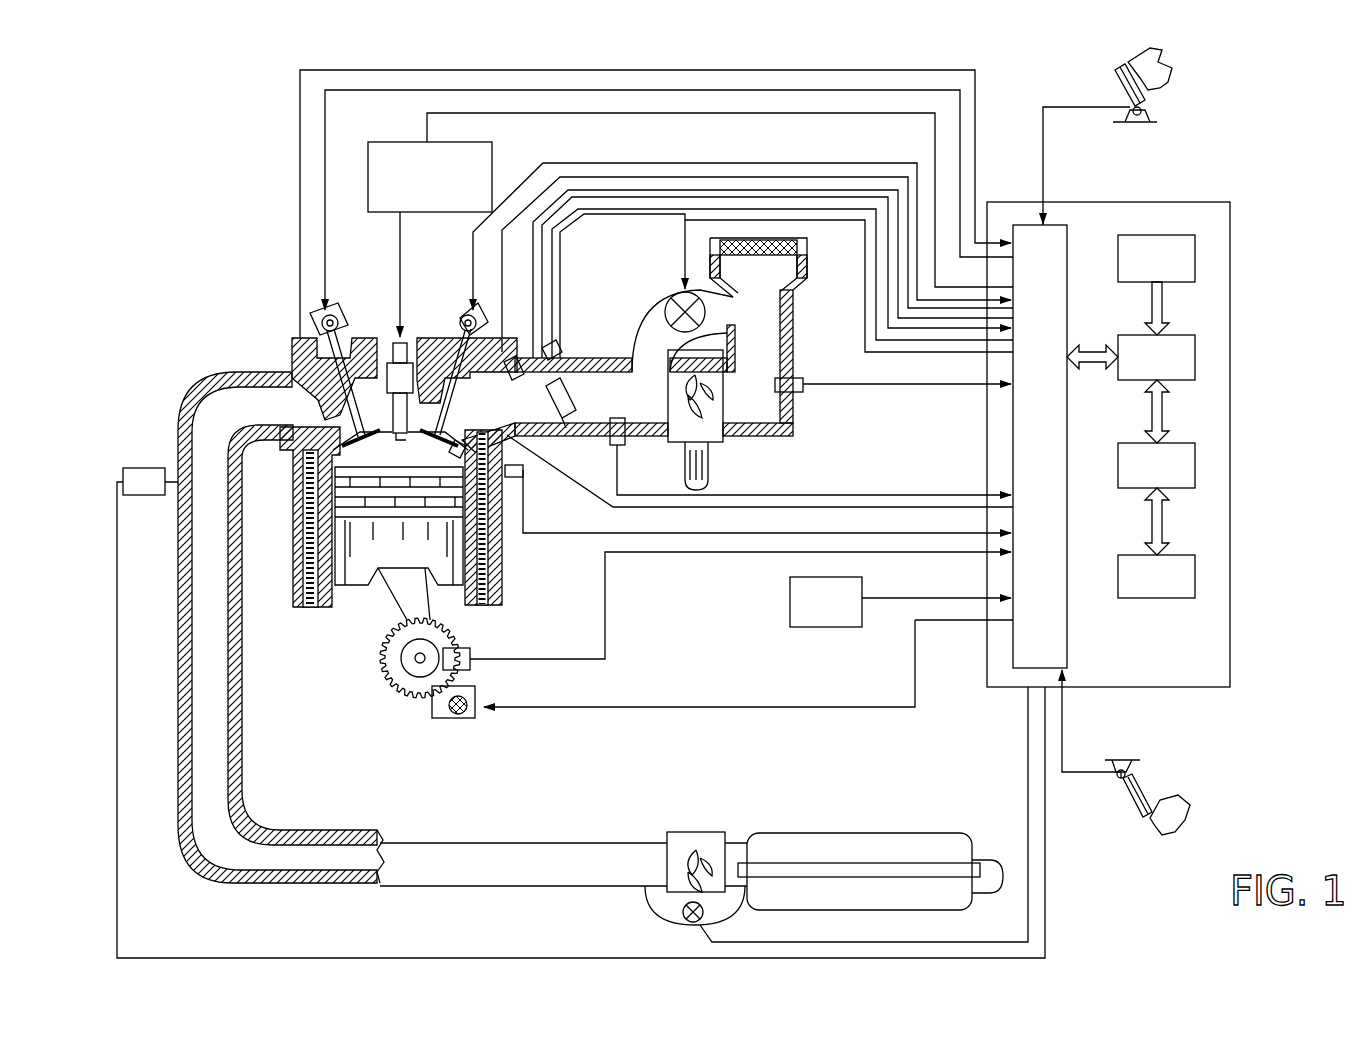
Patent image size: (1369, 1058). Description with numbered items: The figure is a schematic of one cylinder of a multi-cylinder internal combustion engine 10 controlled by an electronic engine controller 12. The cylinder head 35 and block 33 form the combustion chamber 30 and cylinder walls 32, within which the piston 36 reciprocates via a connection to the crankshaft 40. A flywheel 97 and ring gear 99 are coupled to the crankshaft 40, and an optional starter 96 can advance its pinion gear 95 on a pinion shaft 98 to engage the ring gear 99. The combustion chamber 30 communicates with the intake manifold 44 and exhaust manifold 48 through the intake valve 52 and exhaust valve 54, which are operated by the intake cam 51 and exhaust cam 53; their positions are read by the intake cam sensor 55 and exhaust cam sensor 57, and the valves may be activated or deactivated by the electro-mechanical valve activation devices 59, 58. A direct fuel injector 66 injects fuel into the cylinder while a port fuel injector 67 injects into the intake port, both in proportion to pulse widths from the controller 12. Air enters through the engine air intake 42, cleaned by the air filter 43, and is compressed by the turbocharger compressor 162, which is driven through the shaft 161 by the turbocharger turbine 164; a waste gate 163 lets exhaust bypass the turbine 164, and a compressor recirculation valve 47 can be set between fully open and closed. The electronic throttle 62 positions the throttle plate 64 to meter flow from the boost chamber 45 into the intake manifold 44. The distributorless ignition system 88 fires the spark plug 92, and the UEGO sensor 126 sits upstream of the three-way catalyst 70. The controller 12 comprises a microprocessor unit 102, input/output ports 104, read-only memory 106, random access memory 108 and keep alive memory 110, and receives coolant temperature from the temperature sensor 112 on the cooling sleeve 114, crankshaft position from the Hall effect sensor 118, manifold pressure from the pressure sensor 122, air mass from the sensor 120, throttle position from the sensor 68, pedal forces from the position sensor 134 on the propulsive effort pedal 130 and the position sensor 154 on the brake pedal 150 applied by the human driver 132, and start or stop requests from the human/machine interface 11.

The internal combustion engine 10 is at (225, 288).
The human/machine interface 11 is at (900, 602).
The electronic engine controller 12 is at (1230, 202).
The combustion chamber 30 is at (312, 545).
The cylinder walls 32 is at (330, 590).
The block 33 is at (290, 490).
The cylinder head 35 is at (288, 340).
The piston 36 is at (380, 555).
The crankshaft 40 is at (400, 688).
The engine air intake 42 is at (660, 262).
The air filter 43 is at (780, 260).
The intake manifold 44 is at (535, 409).
The boost chamber 45 is at (642, 409).
The compressor recirculation valve 47 is at (680, 295).
The exhaust manifold 48 is at (272, 416).
The intake cam 51 is at (468, 312).
The intake valve 52 is at (450, 402).
The exhaust cam 53 is at (336, 300).
The exhaust valve 54 is at (292, 385).
The intake cam sensor 55 is at (480, 320).
The exhaust cam sensor 57 is at (318, 322).
The valve activation device 58 is at (350, 300).
The valve activation device 59 is at (462, 325).
The electronic throttle 62 is at (558, 405).
The throttle plate 64 is at (570, 428).
The direct fuel injector 66 is at (512, 468).
The port fuel injector 67 is at (512, 358).
The throttle position sensor 68 is at (562, 358).
The three-way catalyst 70 is at (790, 833).
The distributorless ignition system 88 is at (492, 155).
The spark plug 92 is at (408, 345).
The pinion gear 95 is at (460, 718).
The starter 96 is at (468, 718).
The flywheel 97 is at (385, 672).
The pinion shaft 98 is at (448, 710).
The ring gear 99 is at (410, 705).
The microprocessor unit 102 is at (1195, 356).
The input/output ports 104 is at (1068, 232).
The read-only memory 106 is at (1195, 258).
The random access memory 108 is at (1195, 466).
The keep alive memory 110 is at (1195, 577).
The temperature sensor 112 is at (758, 499).
The cooling sleeve 114 is at (505, 555).
The Hall effect sensor 118 is at (470, 652).
The air mass sensor 120 is at (802, 378).
The pressure sensor 122 is at (608, 440).
The Universal Exhaust Gas Oxygen sensor 126 is at (122, 478).
The propulsive effort pedal 130 is at (1122, 85).
The human driver 132 is at (1175, 75).
The position sensor 134 is at (1160, 108).
The brake pedal 150 is at (1145, 818).
The position sensor 154 is at (1118, 770).
The shaft 161 is at (685, 465).
The turbocharger compressor 162 is at (708, 430).
The waste gate 163 is at (690, 922).
The turbocharger turbine 164 is at (667, 835).